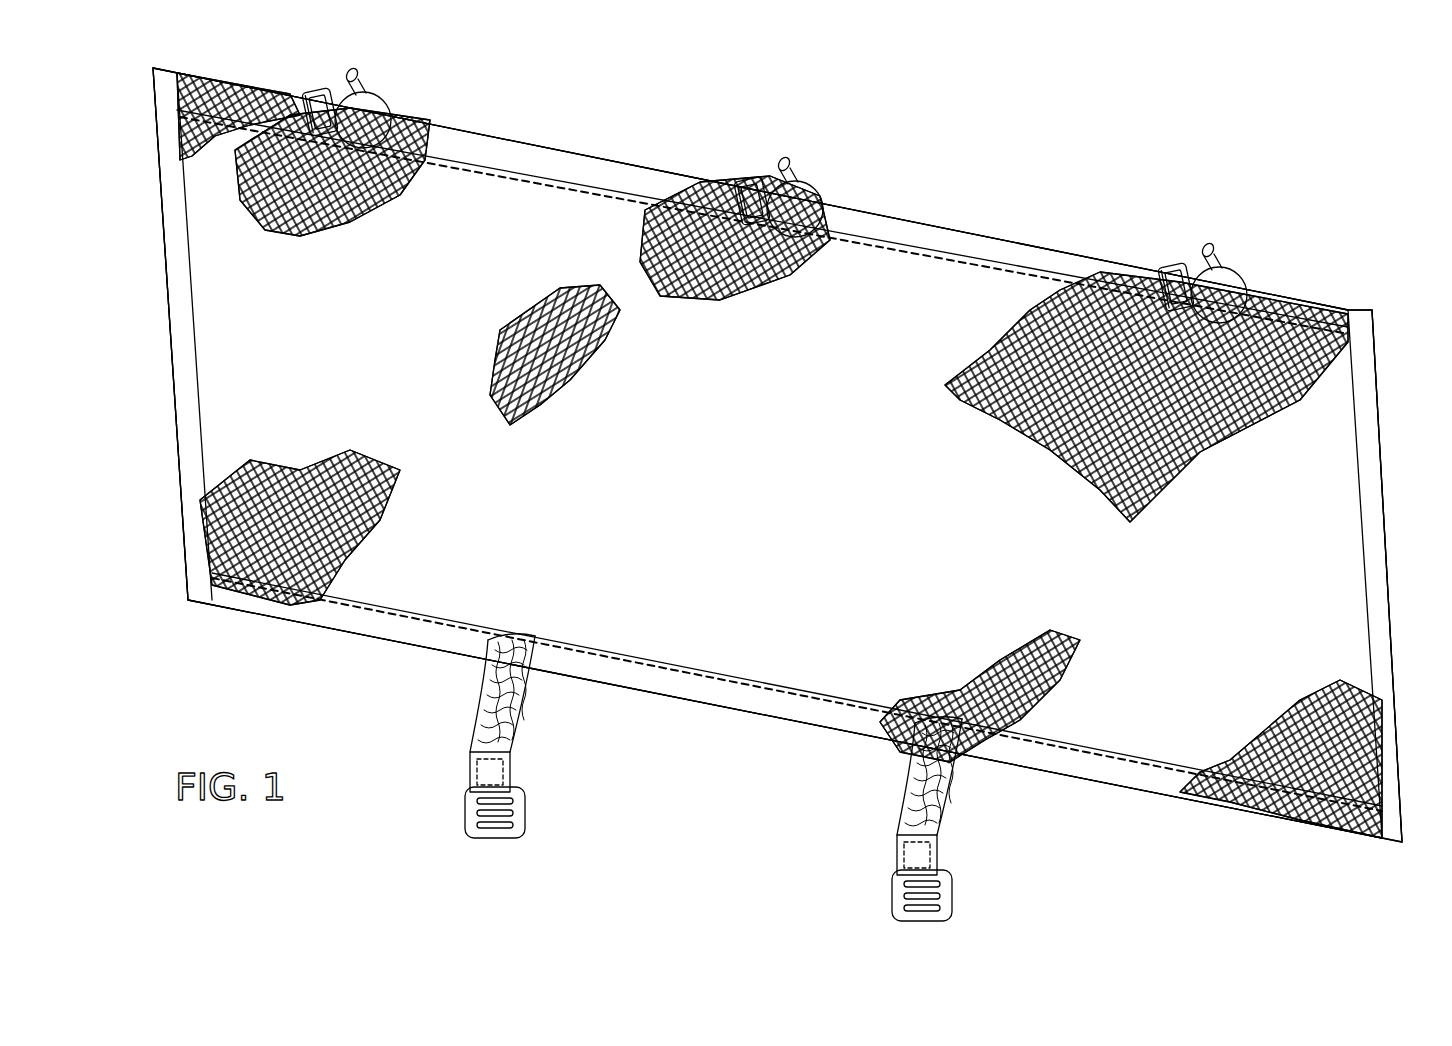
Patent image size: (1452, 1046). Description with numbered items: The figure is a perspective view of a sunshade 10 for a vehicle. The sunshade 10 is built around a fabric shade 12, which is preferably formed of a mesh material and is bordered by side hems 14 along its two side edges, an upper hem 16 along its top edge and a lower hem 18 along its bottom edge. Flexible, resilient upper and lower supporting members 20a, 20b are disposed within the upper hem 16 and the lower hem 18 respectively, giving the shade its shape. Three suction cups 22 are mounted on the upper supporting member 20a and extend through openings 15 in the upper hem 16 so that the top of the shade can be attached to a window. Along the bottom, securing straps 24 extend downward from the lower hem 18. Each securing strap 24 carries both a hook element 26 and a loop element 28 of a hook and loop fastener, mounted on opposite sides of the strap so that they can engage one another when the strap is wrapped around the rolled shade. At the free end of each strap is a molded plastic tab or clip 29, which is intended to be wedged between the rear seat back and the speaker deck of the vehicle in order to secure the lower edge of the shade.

The sunshade 10 is at (1034, 190).
The fabric shade 12 is at (1325, 520).
The side hems 14 is at (173, 242).
The openings 15 is at (693, 207).
The upper hem 16 is at (932, 240).
The lower hem 18 is at (364, 620).
The upper supporting member 20a is at (540, 144).
The lower supporting member 20b is at (654, 680).
The suction cups 22 is at (378, 100).
The securing straps 24 is at (685, 777).
The hook element 26 is at (512, 766).
The loop element 28 is at (483, 725).
The molded plastic tab or clip 29 is at (526, 808).